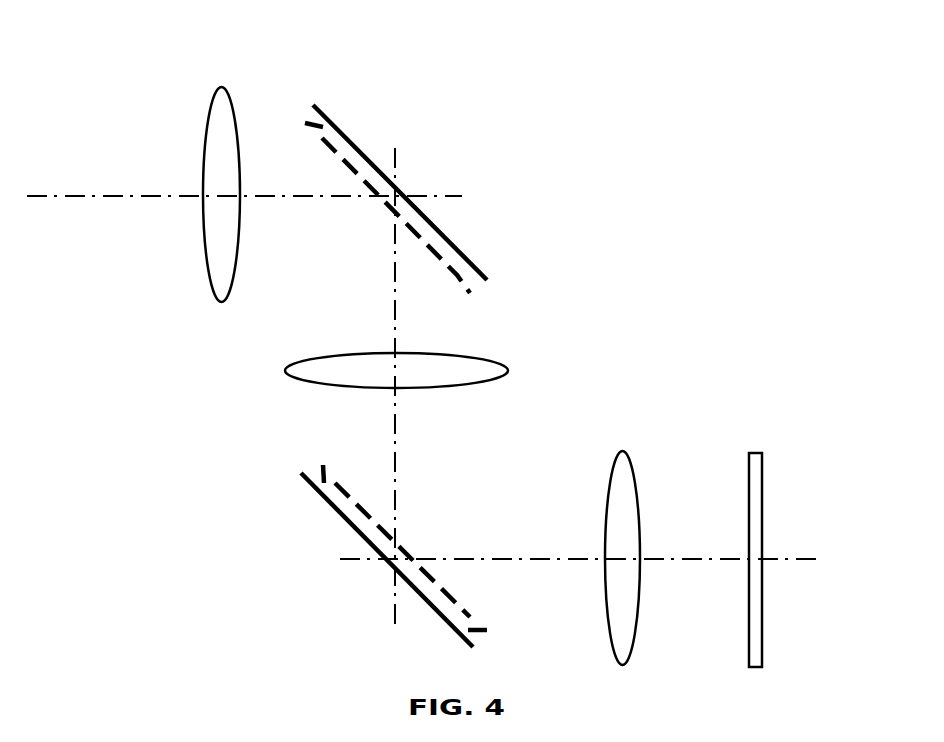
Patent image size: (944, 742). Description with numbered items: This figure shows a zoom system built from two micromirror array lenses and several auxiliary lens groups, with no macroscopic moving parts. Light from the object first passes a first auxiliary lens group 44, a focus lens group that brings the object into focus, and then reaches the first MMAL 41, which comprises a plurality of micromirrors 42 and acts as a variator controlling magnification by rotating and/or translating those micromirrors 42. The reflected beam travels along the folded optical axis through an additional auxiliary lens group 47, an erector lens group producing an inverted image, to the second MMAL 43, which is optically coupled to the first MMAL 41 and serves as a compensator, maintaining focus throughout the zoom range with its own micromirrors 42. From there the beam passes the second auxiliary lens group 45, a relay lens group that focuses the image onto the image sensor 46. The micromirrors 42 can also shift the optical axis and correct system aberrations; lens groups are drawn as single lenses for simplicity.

The first micromirror array lens 41 is at (363, 135).
The micromirrors 42 is at (548, 458).
The second micromirror array lens 43 is at (325, 507).
The first auxiliary lens group 44 is at (210, 305).
The second auxiliary lens group 45 is at (630, 443).
The image sensor 46 is at (767, 445).
The additional auxiliary lens group 47 is at (292, 383).